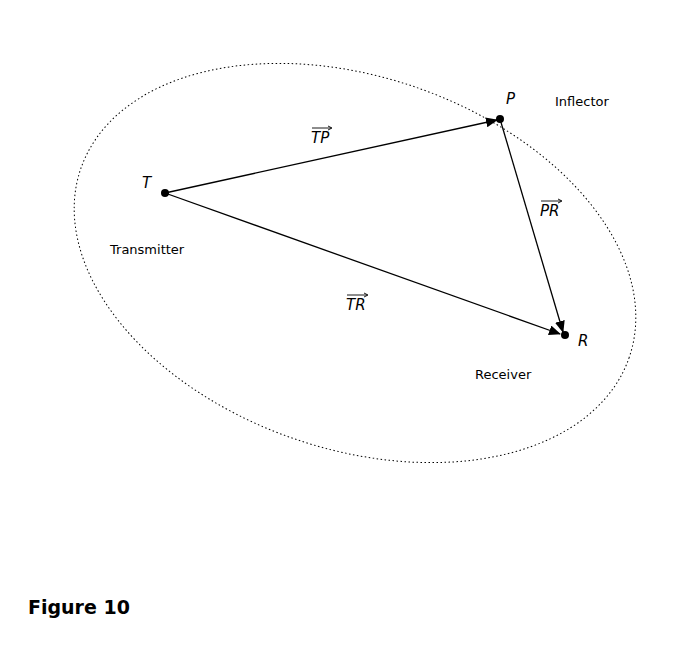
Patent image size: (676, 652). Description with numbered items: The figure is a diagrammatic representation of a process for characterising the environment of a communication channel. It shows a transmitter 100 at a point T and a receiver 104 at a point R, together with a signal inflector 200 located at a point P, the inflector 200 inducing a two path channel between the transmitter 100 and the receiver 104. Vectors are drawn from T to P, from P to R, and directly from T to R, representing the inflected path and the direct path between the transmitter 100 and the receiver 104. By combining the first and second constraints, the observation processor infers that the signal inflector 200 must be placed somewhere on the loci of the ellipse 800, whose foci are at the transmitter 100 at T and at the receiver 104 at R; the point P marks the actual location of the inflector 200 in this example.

The ellipse 800 is at (283, 60).
The transmitter 100 is at (164, 200).
The signal inflector 200 is at (505, 120).
The receiver 104 is at (562, 340).